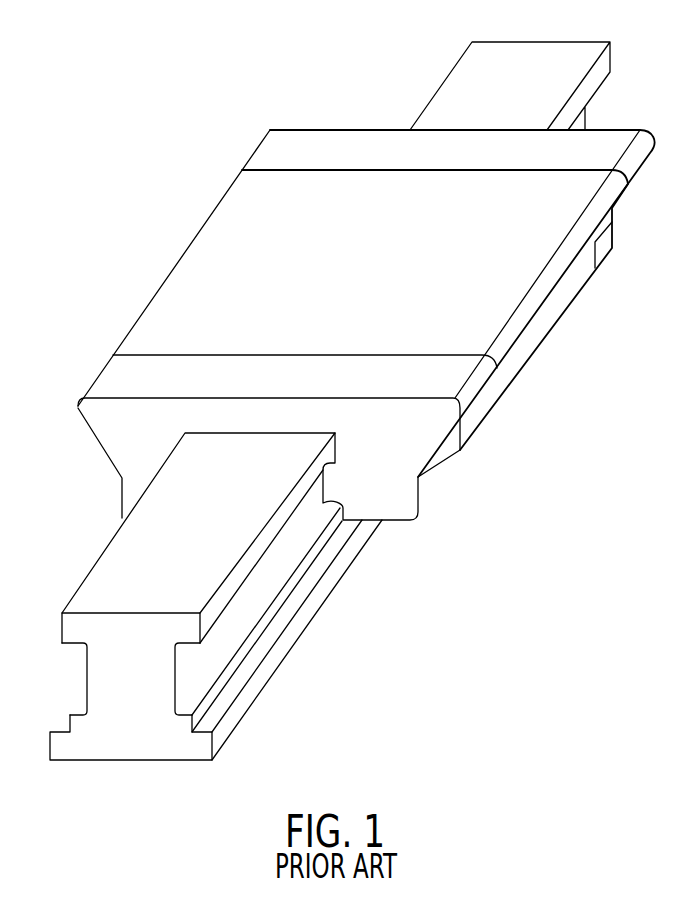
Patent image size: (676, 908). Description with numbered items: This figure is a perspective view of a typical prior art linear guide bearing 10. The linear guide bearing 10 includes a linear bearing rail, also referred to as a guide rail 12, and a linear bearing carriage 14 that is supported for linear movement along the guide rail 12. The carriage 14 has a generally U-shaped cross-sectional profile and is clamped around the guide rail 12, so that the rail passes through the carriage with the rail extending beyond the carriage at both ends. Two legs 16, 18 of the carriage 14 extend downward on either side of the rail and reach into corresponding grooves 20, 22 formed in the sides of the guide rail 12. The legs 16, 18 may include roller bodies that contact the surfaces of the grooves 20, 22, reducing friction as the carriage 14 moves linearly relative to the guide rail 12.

The linear guide bearing 10 is at (118, 105).
The linear bearing rail 12 is at (95, 598).
The linear bearing carriage 14 is at (497, 283).
The leg 16 is at (128, 484).
The leg 18 is at (408, 492).
The groove 20 is at (83, 670).
The groove 22 is at (178, 680).